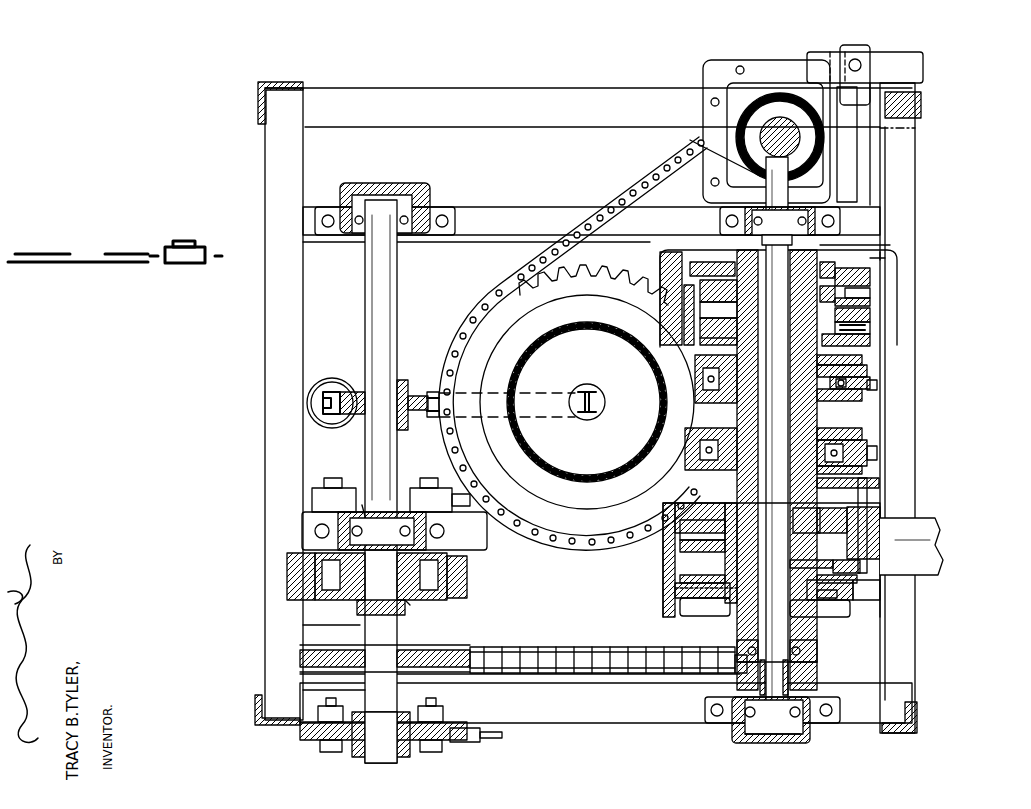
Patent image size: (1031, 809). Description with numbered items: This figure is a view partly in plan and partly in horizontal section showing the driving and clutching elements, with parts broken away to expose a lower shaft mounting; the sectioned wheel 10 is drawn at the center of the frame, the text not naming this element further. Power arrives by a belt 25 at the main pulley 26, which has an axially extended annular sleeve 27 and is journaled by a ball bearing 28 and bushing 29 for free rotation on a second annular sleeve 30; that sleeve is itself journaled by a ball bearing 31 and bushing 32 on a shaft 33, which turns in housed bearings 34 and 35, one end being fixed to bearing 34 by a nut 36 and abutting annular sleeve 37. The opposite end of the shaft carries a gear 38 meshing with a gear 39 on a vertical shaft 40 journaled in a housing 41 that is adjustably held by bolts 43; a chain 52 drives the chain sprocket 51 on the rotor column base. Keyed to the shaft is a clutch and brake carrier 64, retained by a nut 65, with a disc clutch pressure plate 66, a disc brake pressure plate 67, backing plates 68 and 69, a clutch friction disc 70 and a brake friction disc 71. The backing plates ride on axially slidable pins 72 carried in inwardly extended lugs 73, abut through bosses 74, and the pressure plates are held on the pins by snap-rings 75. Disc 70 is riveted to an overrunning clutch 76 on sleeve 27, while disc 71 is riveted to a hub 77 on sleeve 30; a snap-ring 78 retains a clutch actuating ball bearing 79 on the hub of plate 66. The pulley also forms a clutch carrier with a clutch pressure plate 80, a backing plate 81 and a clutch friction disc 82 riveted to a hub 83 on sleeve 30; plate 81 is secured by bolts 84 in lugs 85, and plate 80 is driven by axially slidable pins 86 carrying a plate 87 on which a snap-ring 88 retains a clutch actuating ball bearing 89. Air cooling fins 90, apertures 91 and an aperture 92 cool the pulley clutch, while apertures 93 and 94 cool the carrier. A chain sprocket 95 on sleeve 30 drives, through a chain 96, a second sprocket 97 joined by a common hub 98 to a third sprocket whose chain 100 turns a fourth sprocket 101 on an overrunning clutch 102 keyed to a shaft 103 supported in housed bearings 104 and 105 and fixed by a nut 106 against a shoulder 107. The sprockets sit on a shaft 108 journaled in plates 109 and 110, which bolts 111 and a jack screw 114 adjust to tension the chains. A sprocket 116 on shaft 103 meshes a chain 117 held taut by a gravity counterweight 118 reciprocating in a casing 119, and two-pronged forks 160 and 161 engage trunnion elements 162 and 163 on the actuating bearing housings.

The wheel 10 is at (528, 354).
The belt 25 is at (936, 556).
The main pulley 26 is at (936, 526).
The annular sleeve 27 is at (815, 410).
The ball bearing 28 is at (878, 533).
The bushing 29 is at (850, 283).
The annular sleeve 30 is at (818, 640).
The ball bearing 31 is at (742, 650).
The bushing 32 is at (740, 262).
The shaft 33 is at (775, 421).
The housed bearing 34 is at (737, 722).
The housed bearing 35 is at (847, 195).
The nut 36 is at (755, 745).
The annular sleeve 37 is at (792, 681).
The gear 38 is at (709, 153).
The gear 39 is at (752, 100).
The vertical shaft 40 is at (779, 128).
The housing 41 is at (767, 68).
The bolts 43 is at (858, 62).
The chain sprocket 51 is at (601, 275).
The chain 52 is at (651, 187).
The clutch and brake carrier 64 is at (888, 258).
The nut 65 is at (832, 240).
The disc clutch pressure plate 66 is at (870, 345).
The disc brake pressure plate 67 is at (880, 288).
The backing plate 68 is at (866, 322).
The backing plate 69 is at (870, 312).
The clutch friction disc 70 is at (870, 334).
The brake friction disc 71 is at (875, 300).
The axially slidable pins 72 is at (690, 340).
The lugs 73 is at (660, 284).
The bosses 74 is at (668, 301).
The snap-rings 75 is at (678, 283).
The overrunning clutch 76 is at (865, 358).
The hub 77 is at (892, 253).
The snap-ring 78 is at (862, 398).
The clutch actuating ball bearing 79 is at (878, 386).
The clutch pressure plate 80 is at (861, 565).
The backing plate 81 is at (882, 599).
The clutch friction disc 82 is at (882, 583).
The hub 83 is at (860, 618).
The bolts 84 is at (677, 592).
The lugs 85 is at (678, 580).
The axially slidable pins 86 is at (867, 509).
The plate 87 is at (879, 484).
The snap-ring 88 is at (862, 433).
The clutch actuating ball bearing 89 is at (862, 470).
The air cooling fins 90 is at (680, 558).
The apertures 91 is at (703, 511).
The aperture 92 is at (880, 592).
The apertures 93 is at (840, 254).
The apertures 94 is at (885, 272).
The chain sprocket 95 is at (733, 672).
The chain 96 is at (540, 647).
The second sprocket 97 is at (445, 651).
The common hub 98 is at (363, 632).
The chain 100 is at (288, 580).
The fourth sprocket 101 is at (468, 575).
The overrunning clutch 102 is at (408, 600).
The shaft 103 is at (366, 268).
The housed bearing 104 is at (303, 531).
The housed bearing 105 is at (418, 186).
The nut 106 is at (357, 608).
The shoulder 107 is at (365, 490).
The shaft 108 is at (340, 690).
The plate 109 is at (305, 732).
The plate 110 is at (313, 498).
The bolts 111 is at (328, 480).
The jack screw 114 is at (460, 496).
The sprocket 116 is at (410, 378).
The chain 117 is at (585, 421).
The gravity counterweight 118 is at (307, 396).
The casing 119 is at (341, 384).
The two-pronged fork 160 is at (878, 457).
The two-pronged fork 161 is at (870, 370).
The trunnion elements 162 is at (868, 452).
The trunnion elements 163 is at (872, 384).